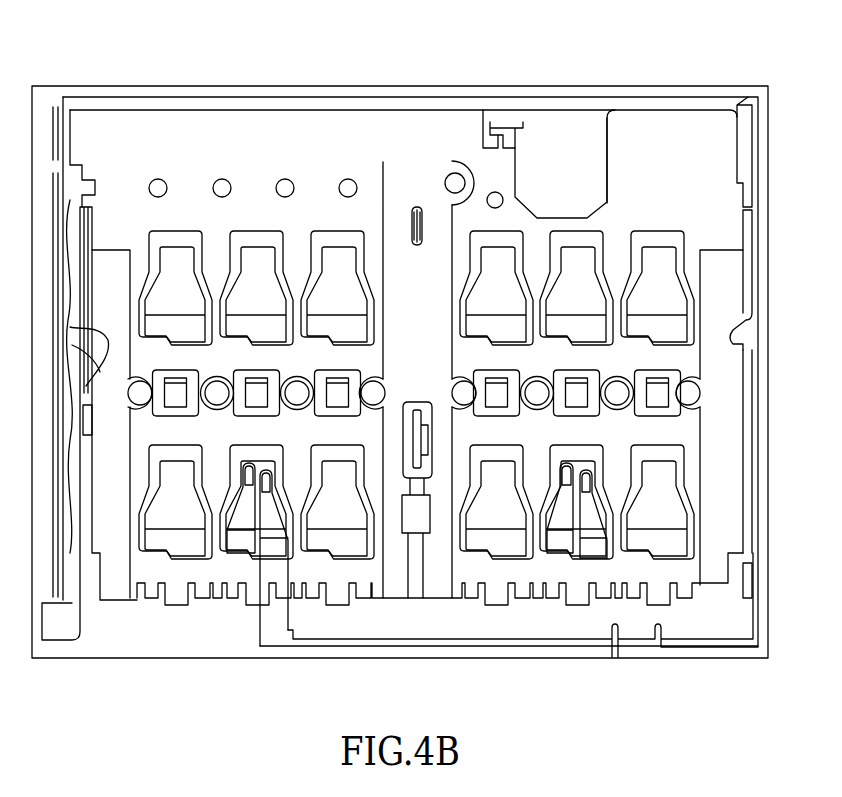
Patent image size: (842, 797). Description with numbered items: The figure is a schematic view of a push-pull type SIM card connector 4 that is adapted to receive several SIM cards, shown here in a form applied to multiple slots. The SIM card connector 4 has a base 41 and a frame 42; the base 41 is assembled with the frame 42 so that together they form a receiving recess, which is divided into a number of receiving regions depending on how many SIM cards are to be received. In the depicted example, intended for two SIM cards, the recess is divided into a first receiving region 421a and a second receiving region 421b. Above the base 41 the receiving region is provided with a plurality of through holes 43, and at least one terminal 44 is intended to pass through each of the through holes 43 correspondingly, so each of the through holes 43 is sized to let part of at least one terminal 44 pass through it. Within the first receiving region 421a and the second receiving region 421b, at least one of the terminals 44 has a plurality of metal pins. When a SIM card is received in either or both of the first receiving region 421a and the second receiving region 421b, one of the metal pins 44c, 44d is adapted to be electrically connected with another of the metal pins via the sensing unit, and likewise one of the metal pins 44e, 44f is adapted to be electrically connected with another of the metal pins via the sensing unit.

The SIM card connector 4 is at (66, 50).
The base 41 is at (725, 130).
The frame 42 is at (743, 153).
The first receiving region 421a is at (633, 130).
The second receiving region 421b is at (165, 130).
The through hole 43 is at (682, 242).
The terminal 44 is at (673, 275).
The metal pin 44c is at (553, 520).
The metal pin 44d is at (593, 540).
The metal pin 44e is at (242, 538).
The metal pin 44f is at (275, 545).